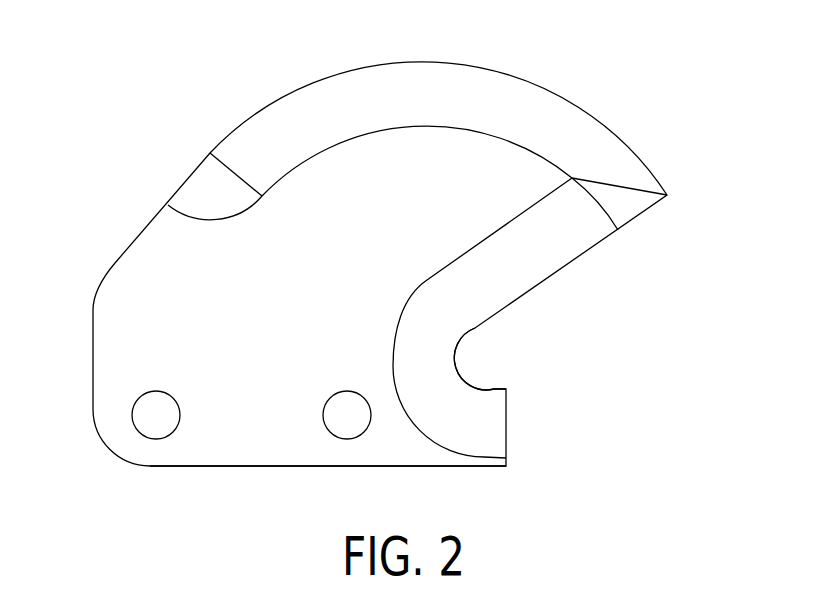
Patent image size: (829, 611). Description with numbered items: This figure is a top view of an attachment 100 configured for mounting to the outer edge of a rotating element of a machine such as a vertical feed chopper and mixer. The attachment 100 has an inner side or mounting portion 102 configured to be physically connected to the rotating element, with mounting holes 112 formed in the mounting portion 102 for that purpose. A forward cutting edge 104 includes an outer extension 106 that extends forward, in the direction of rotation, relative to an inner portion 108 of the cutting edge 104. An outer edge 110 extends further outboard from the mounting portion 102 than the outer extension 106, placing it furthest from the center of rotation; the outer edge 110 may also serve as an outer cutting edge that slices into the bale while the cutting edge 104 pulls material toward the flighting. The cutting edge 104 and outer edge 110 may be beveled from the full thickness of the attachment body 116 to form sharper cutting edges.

The attachment 100 is at (178, 267).
The mounting portion 102 is at (253, 448).
The cutting edge 104 is at (517, 265).
The outer extension 106 is at (668, 195).
The inner portion 108 is at (470, 372).
The outer edge 110 is at (450, 63).
The mounting holes 112 is at (177, 400).
The attachment body 116 is at (327, 244).